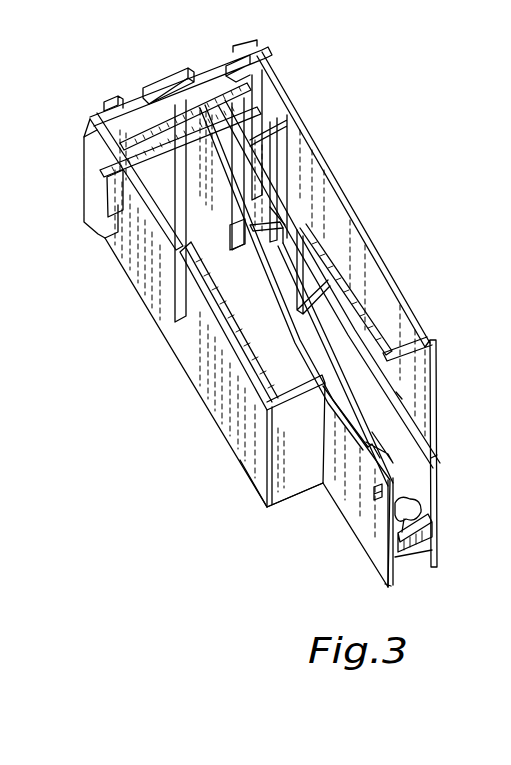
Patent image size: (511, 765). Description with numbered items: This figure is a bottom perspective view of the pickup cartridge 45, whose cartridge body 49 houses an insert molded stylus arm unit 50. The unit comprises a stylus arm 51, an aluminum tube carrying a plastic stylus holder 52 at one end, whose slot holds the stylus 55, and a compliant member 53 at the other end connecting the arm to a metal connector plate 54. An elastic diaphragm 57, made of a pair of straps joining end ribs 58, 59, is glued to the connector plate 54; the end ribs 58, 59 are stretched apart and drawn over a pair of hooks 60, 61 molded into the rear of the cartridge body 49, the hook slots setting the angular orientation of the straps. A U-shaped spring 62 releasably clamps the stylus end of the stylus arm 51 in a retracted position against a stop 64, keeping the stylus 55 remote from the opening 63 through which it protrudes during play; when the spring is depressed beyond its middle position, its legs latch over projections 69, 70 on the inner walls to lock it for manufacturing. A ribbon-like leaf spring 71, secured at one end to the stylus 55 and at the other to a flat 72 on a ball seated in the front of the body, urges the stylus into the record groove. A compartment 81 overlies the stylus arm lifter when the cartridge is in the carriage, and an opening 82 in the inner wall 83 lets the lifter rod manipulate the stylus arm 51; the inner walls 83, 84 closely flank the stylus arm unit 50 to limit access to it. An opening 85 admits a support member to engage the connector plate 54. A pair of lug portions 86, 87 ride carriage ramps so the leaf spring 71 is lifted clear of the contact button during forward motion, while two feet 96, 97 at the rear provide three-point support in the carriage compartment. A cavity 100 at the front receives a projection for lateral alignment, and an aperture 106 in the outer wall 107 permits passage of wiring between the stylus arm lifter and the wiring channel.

The cartridge 45 is at (355, 141).
The cartridge body 49 is at (253, 484).
The insert molded stylus arm unit 50 is at (350, 296).
The stylus arm 51 is at (407, 372).
The plastic stylus holder 52 is at (350, 483).
The compliant member 53 is at (192, 104).
The connector plate 54 is at (158, 106).
The stylus 55 is at (392, 437).
The elastic diaphragm 57 is at (261, 62).
The end rib 58 is at (258, 84).
The end rib 59 is at (96, 135).
The hook 60 is at (265, 107).
The hook 61 is at (96, 160).
The U-shaped spring 62 is at (212, 352).
The opening 63 is at (398, 396).
The stop 64 is at (370, 236).
The projection 69 is at (283, 222).
The projection 70 is at (227, 223).
The leaf spring 71 is at (418, 504).
The flat 72 is at (408, 548).
The compartment 81 is at (212, 368).
The opening 82 is at (190, 307).
The inner wall 83 is at (296, 441).
The inner wall 84 is at (392, 318).
The opening 85 is at (187, 107).
The lug portion 86 is at (415, 504).
The lug portion 87 is at (360, 523).
The foot 96 is at (246, 46).
The foot 97 is at (108, 100).
The cavity 100 is at (440, 463).
The aperture 106 is at (358, 212).
The outer wall 107 is at (240, 282).